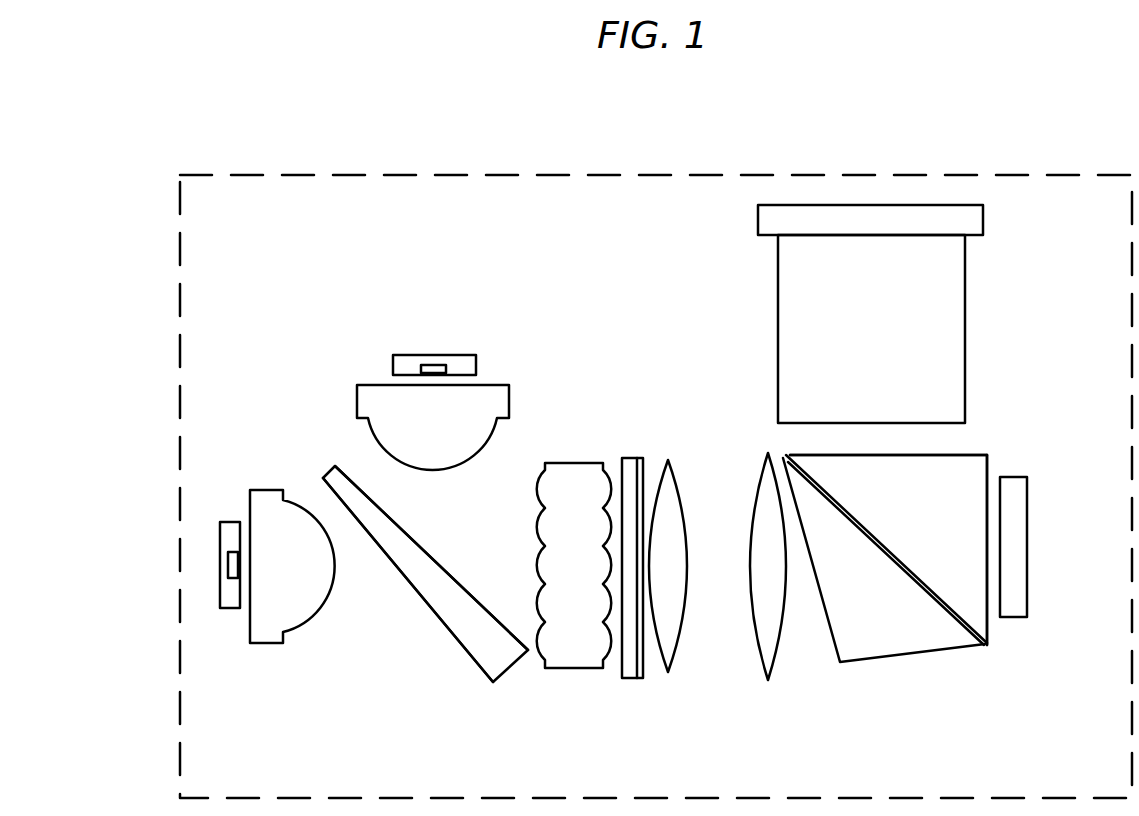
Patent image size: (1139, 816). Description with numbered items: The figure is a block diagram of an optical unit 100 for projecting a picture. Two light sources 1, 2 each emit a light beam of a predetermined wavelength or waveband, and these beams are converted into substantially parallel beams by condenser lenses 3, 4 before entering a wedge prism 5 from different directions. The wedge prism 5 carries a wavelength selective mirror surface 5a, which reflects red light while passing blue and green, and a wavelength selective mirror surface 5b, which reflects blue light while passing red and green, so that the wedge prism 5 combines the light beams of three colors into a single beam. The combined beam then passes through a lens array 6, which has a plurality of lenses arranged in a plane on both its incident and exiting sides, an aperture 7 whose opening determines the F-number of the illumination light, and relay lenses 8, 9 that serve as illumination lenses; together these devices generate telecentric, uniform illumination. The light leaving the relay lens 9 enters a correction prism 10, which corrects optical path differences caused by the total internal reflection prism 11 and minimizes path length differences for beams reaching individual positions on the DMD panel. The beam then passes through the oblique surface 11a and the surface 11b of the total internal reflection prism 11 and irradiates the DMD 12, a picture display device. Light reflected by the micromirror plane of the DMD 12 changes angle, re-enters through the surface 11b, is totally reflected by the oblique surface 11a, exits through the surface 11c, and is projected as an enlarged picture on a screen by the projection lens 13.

The optical unit 100 is at (912, 177).
The light source 1 is at (228, 533).
The light source 2 is at (400, 363).
The condenser lens 3 is at (265, 500).
The condenser lens 4 is at (380, 408).
The wedge prism 5 is at (422, 540).
The wavelength selective mirror surface 5a is at (457, 578).
The wavelength selective mirror surface 5b is at (463, 648).
The lens array 6 is at (572, 657).
The aperture 7 is at (628, 665).
The relay lens 8 is at (680, 660).
The relay lens 9 is at (785, 647).
The correction prism 10 is at (925, 640).
The total internal reflection prism 11 is at (901, 522).
The oblique surface 11a is at (898, 553).
The surface 11b is at (987, 472).
The surface 11c is at (953, 455).
The DMD 12 is at (1007, 597).
The projection lens 13 is at (948, 315).